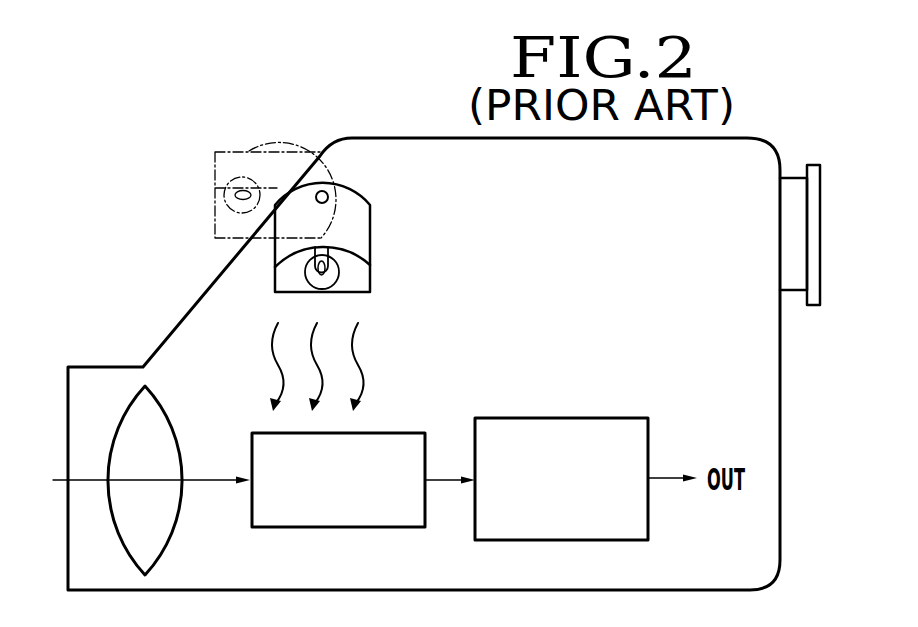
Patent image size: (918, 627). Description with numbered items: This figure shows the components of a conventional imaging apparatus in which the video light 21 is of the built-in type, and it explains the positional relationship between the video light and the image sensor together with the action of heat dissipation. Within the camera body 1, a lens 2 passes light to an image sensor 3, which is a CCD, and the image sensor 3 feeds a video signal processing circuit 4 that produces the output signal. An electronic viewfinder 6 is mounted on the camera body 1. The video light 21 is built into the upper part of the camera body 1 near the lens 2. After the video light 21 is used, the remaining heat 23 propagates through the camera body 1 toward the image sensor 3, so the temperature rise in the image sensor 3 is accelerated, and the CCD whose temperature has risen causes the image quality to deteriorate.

The camera body 1 is at (411, 137).
The lens 2 is at (175, 532).
The image sensor 3 is at (413, 527).
The video signal processing circuit 4 is at (617, 418).
The electronic viewfinder 6 is at (793, 178).
The video light 21 is at (278, 150).
The remaining heat 23 is at (363, 358).